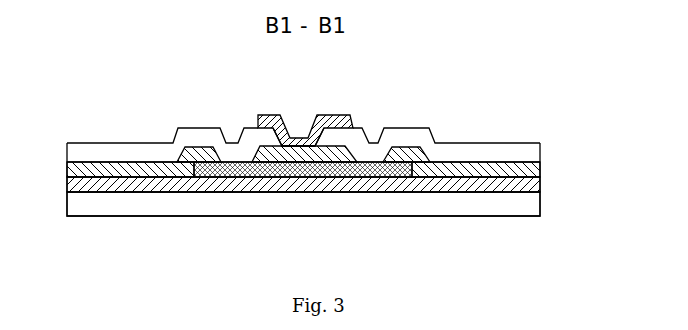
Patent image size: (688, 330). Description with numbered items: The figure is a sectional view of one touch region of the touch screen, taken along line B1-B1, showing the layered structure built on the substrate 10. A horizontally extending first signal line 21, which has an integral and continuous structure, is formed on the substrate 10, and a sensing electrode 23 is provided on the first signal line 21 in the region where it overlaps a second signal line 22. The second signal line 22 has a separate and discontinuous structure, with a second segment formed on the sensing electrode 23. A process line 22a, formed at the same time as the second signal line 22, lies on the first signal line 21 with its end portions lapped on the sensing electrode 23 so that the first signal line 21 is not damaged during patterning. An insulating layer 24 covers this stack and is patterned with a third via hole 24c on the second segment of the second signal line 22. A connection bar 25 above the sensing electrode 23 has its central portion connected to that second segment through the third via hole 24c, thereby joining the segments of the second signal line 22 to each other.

The substrate 10 is at (177, 203).
The first signal line 21 is at (455, 186).
The second signal line 22 is at (297, 157).
The process line 22a is at (447, 170).
The sensing electrode 23 is at (352, 172).
The insulating layer 24 is at (152, 153).
The third via hole 24c is at (295, 127).
The connection bar 25 is at (278, 119).